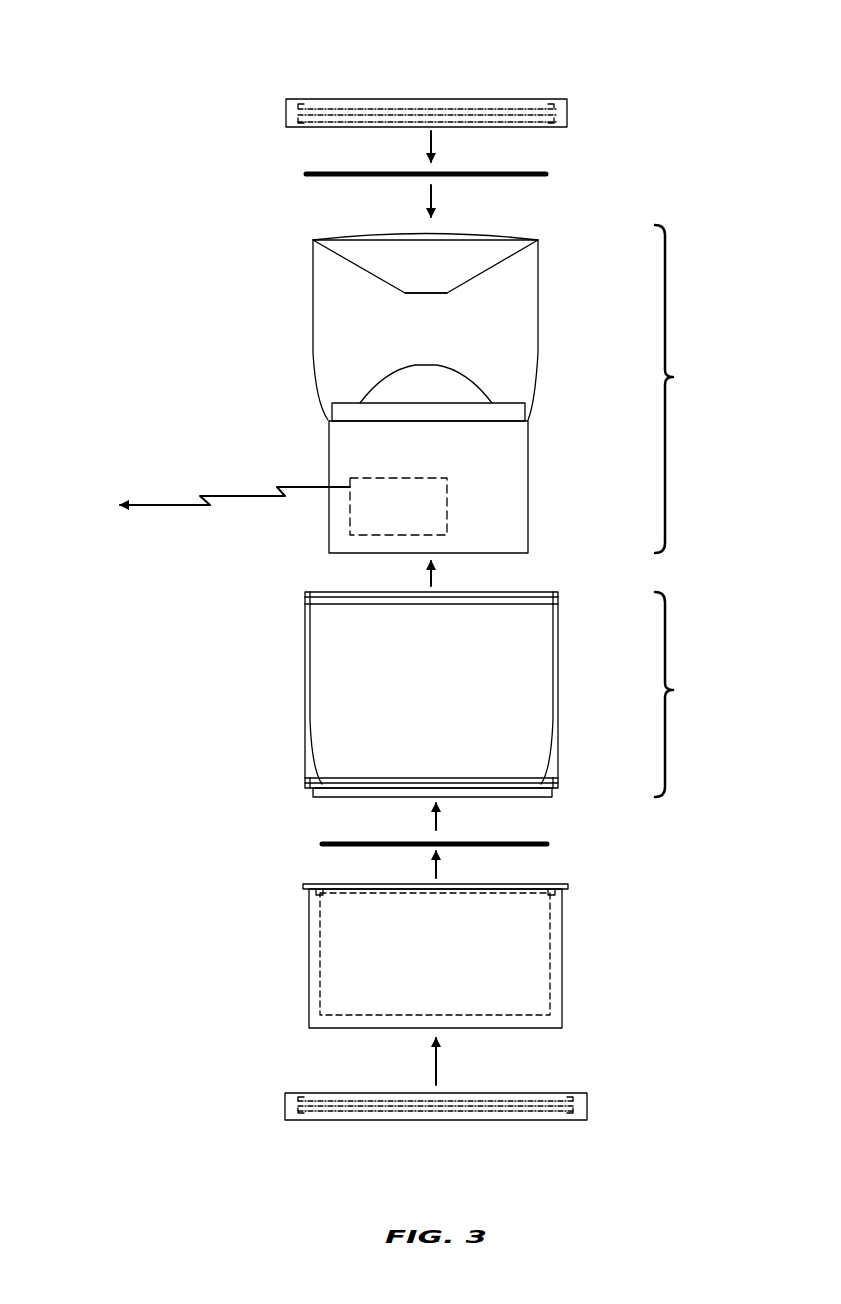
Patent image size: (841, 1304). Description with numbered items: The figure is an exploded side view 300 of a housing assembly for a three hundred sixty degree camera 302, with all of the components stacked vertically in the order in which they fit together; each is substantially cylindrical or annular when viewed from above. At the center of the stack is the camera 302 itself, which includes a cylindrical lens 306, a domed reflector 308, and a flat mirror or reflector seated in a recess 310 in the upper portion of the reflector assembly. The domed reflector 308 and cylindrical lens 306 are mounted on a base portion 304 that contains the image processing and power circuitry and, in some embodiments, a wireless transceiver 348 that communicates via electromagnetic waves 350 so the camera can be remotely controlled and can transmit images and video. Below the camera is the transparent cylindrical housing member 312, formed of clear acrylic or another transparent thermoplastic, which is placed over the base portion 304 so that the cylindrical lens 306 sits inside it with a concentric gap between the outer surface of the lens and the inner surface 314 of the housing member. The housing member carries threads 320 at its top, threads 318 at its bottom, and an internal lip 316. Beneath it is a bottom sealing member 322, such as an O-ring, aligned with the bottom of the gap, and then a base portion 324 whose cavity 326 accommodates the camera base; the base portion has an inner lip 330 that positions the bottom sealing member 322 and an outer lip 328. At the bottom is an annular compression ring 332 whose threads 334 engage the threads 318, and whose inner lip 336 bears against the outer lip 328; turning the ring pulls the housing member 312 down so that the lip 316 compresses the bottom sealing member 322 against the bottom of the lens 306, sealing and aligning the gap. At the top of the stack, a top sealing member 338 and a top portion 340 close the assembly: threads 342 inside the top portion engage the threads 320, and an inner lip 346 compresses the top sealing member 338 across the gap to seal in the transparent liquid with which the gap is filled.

The exploded side view 300 is at (86, 73).
The 360 degree camera 302 is at (417, 389).
The base portion 304 is at (528, 498).
The cylindrical lens 306 is at (540, 285).
The domed reflector 308 is at (388, 378).
The recess 310 is at (423, 298).
The transparent cylindrical housing member 312 is at (512, 705).
The inner surface 314 is at (308, 655).
The lip 316 is at (325, 788).
The threads 318 is at (558, 783).
The threads 320 is at (558, 597).
The bottom sealing member 322 is at (547, 847).
The base portion 324 is at (562, 957).
The cavity 326 is at (412, 903).
The outer lip 328 is at (303, 888).
The inner lip 330 is at (320, 893).
The annular compression ring 332 is at (587, 1097).
The threads 334 is at (413, 1100).
The inner lip 336 is at (302, 1112).
The top sealing member 338 is at (533, 177).
The top portion 340 is at (456, 113).
The threads 342 is at (497, 118).
The inner lip 346 is at (306, 105).
The wireless transceiver 348 is at (350, 520).
The electromagnetic waves 350 is at (238, 495).